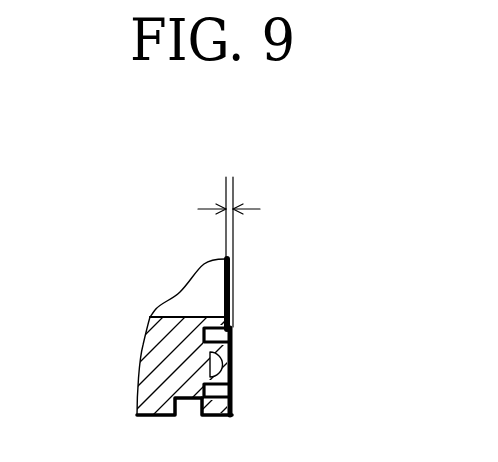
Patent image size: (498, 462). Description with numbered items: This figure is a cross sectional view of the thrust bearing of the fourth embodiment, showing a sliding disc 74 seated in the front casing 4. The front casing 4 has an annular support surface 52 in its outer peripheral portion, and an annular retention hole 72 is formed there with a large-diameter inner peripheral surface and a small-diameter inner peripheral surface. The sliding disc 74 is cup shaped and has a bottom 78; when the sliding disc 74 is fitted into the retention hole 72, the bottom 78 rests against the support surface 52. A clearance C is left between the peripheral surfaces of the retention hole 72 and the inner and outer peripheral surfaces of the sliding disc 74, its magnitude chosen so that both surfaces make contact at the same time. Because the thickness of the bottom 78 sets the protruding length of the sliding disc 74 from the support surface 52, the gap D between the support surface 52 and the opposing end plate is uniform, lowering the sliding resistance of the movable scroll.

The front casing 4 is at (158, 393).
The support surface 52 is at (180, 302).
The retention hole 72 is at (207, 372).
The sliding disc 74 is at (232, 384).
The bottom 78 is at (232, 353).
The clearance C is at (231, 331).
The gap D is at (229, 233).